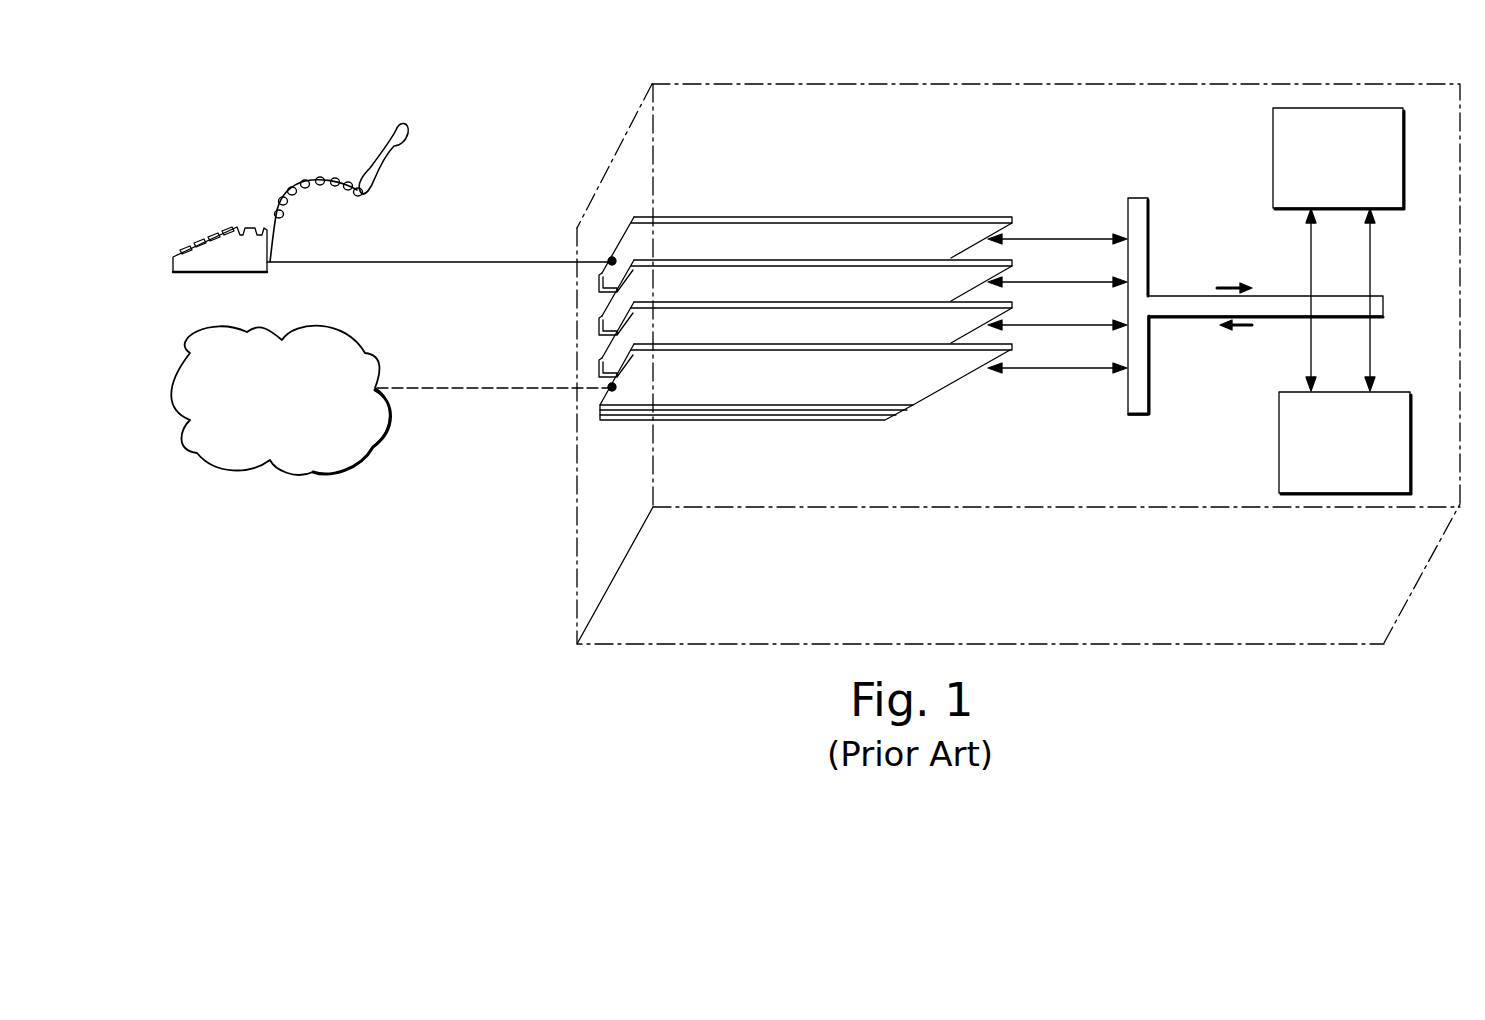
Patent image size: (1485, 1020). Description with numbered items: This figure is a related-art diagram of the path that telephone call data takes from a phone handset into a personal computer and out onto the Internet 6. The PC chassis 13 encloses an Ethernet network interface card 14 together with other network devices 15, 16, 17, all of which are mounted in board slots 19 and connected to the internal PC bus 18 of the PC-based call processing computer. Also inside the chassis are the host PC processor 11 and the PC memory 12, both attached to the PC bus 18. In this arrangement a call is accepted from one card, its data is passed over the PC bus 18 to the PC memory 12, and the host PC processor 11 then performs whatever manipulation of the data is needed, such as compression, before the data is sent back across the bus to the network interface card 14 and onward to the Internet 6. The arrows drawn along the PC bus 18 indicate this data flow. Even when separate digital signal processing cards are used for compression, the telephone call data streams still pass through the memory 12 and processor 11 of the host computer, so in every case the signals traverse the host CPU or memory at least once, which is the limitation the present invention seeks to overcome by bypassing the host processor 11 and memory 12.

The Internet 6 is at (280, 400).
The host PC processor 11 is at (1272, 153).
The PC memory 12 is at (1279, 448).
The PC chassis 13 is at (1080, 642).
The Ethernet network interface card 14 is at (767, 217).
The network device 15 is at (823, 258).
The network device 16 is at (843, 301).
The network device 17 is at (947, 383).
The PC bus 18 is at (1164, 236).
The board slots 19 is at (595, 440).